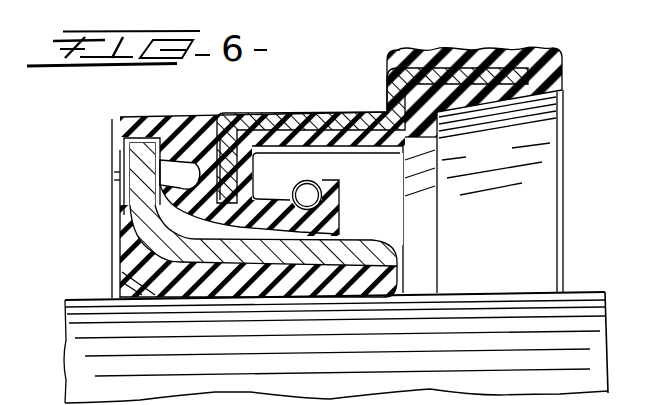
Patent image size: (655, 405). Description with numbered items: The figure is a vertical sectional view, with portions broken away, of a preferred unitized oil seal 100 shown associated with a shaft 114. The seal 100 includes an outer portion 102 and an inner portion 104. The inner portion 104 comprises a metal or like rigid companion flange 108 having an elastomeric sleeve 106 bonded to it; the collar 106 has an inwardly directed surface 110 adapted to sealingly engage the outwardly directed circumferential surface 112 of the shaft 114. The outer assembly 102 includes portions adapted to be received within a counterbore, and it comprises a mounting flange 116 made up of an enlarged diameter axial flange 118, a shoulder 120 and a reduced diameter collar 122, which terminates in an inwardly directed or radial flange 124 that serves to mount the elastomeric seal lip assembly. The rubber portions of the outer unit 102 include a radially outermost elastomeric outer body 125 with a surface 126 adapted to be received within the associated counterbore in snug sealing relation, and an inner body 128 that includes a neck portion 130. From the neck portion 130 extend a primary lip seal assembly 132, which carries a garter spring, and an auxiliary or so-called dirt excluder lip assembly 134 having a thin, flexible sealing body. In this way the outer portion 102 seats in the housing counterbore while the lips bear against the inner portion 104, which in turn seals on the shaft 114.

The seal 100 is at (318, 76).
The outer portion 102 is at (580, 80).
The inner portion 104 is at (105, 284).
The elastomeric sleeve 106 is at (124, 259).
The companion flange 108 is at (389, 254).
The inwardly directed surface 110 is at (330, 297).
The outwardly directed circumferential surface 112 is at (573, 291).
The shaft 114 is at (608, 317).
The mounting flange 116 is at (263, 108).
The axial flange 118 is at (482, 80).
The shoulder 120 is at (385, 106).
The collar 122 is at (340, 124).
The radial flange 124 is at (212, 118).
The elastomeric outer body 125 is at (402, 53).
The surface 126 is at (426, 52).
The inner body 128 is at (412, 132).
The neck portion 130 is at (357, 167).
The primary lip seal assembly 132 is at (401, 163).
The dirt excluder lip assembly 134 is at (182, 178).